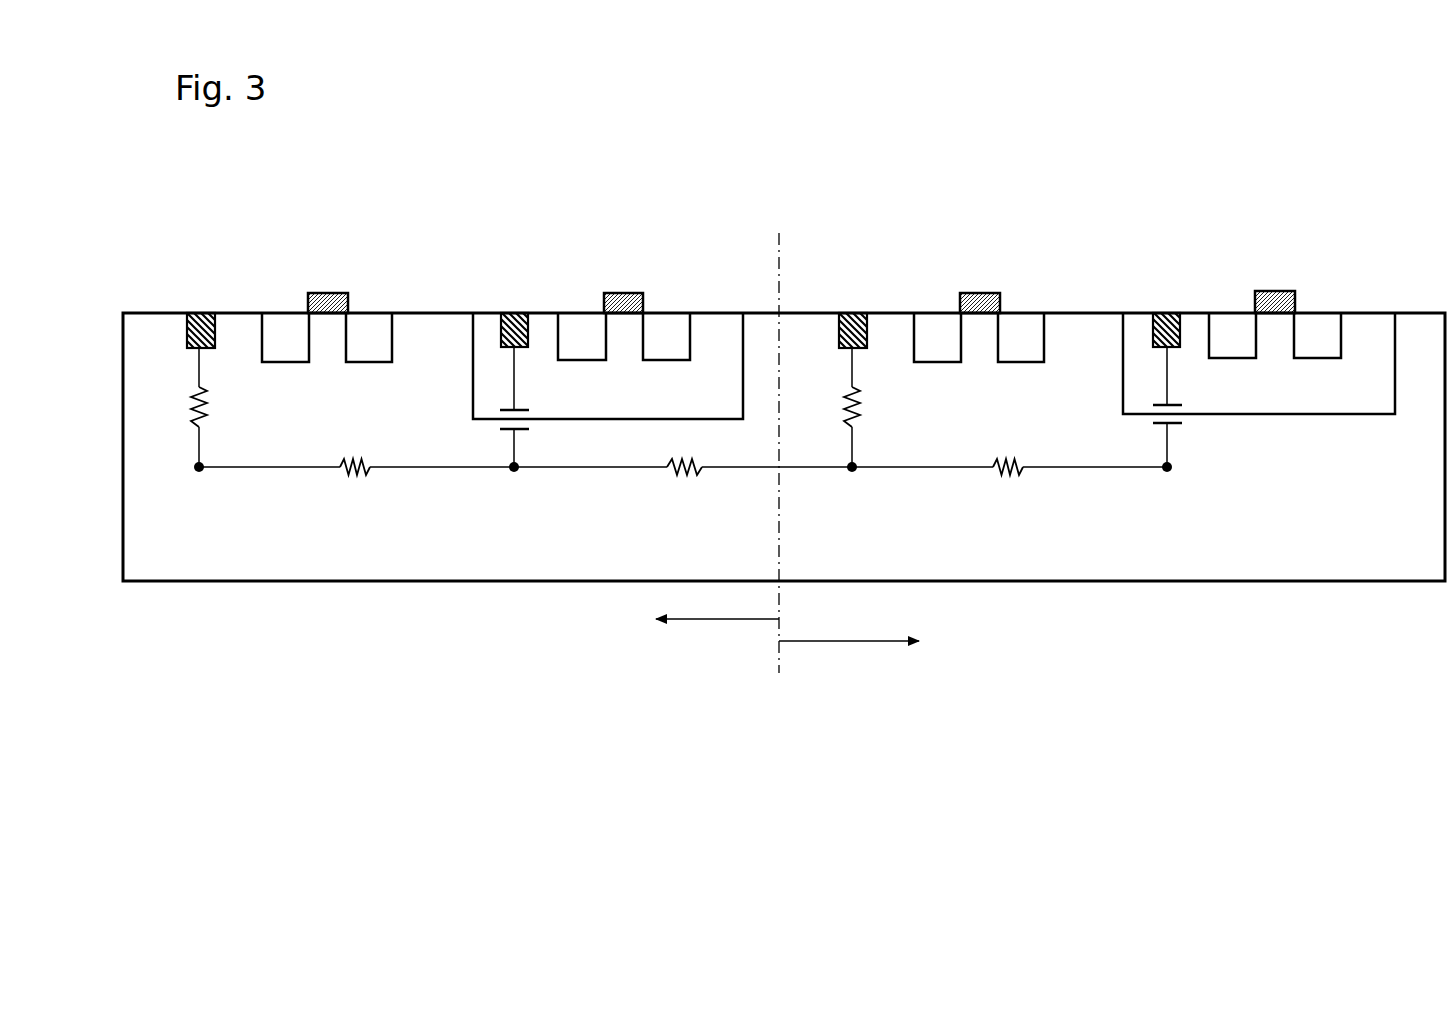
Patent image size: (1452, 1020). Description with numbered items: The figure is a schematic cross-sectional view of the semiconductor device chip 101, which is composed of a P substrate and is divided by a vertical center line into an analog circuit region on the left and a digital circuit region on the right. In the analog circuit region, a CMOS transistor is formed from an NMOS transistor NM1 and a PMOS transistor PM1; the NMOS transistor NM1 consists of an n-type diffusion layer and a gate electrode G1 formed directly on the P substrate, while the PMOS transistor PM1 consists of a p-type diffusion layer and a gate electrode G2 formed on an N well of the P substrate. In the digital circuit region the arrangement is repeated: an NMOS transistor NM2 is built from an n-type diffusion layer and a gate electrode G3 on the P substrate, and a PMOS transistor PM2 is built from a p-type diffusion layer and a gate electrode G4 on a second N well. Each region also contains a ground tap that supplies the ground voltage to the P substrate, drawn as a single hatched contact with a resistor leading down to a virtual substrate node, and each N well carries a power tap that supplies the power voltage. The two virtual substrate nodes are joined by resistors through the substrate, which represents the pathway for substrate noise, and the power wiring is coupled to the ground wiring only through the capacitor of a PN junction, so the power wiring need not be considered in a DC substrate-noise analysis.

The semiconductor device chip 101 is at (1209, 134).
The NMOS transistor NM1 is at (355, 301).
The PMOS transistor PM1 is at (648, 301).
The NMOS transistor NM2 is at (1006, 301).
The PMOS transistor PM2 is at (1298, 299).
The gate electrode G1 is at (330, 287).
The gate electrode G2 is at (623, 288).
The gate electrode G3 is at (981, 288).
The gate electrode G4 is at (1275, 287).